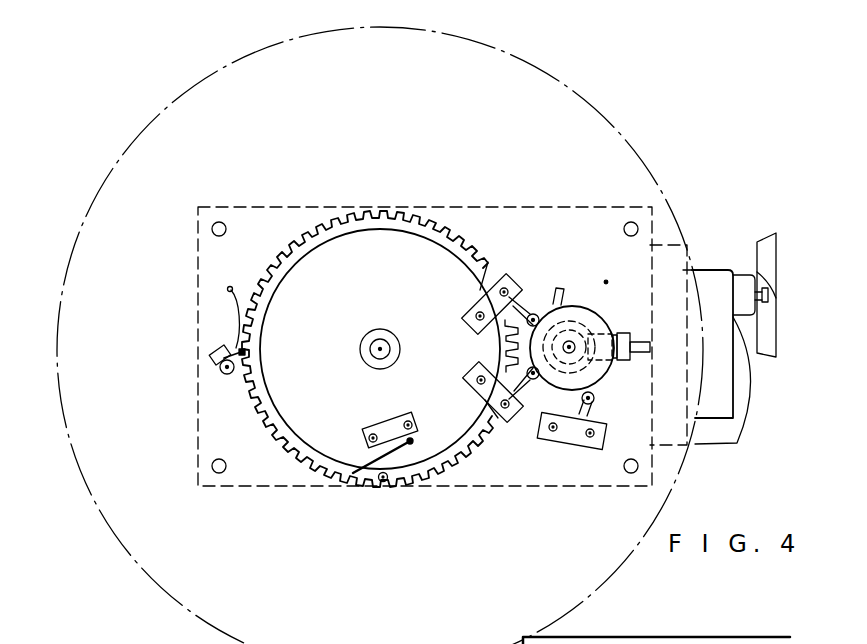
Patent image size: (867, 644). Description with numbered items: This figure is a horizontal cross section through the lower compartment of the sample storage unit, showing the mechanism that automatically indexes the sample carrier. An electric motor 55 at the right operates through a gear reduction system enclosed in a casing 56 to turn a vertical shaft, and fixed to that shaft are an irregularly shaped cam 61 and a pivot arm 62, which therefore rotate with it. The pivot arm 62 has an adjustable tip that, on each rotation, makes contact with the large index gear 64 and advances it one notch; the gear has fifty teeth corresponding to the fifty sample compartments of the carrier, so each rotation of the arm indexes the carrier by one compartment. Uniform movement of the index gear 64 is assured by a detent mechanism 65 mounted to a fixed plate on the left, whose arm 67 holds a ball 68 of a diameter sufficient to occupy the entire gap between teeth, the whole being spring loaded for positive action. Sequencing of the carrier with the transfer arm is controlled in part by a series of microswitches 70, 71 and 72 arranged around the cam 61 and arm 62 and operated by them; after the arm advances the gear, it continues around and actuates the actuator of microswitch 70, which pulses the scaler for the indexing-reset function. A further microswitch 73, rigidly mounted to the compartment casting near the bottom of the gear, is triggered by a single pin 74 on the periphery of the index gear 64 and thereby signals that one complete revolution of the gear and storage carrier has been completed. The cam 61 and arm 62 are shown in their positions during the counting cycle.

The electric motor 55 is at (707, 280).
The casing 56 is at (665, 252).
The irregularly shaped cam 61 is at (588, 318).
The pivot arm 62 is at (566, 292).
The index gear 64 is at (413, 248).
The detent mechanism 65 is at (219, 346).
The arm 67 is at (237, 380).
The ball 68 is at (225, 312).
The microswitch 70 is at (563, 448).
The microswitch 71 is at (480, 397).
The microswitch 72 is at (475, 303).
The microswitch 73 is at (393, 423).
The pin 74 is at (386, 473).